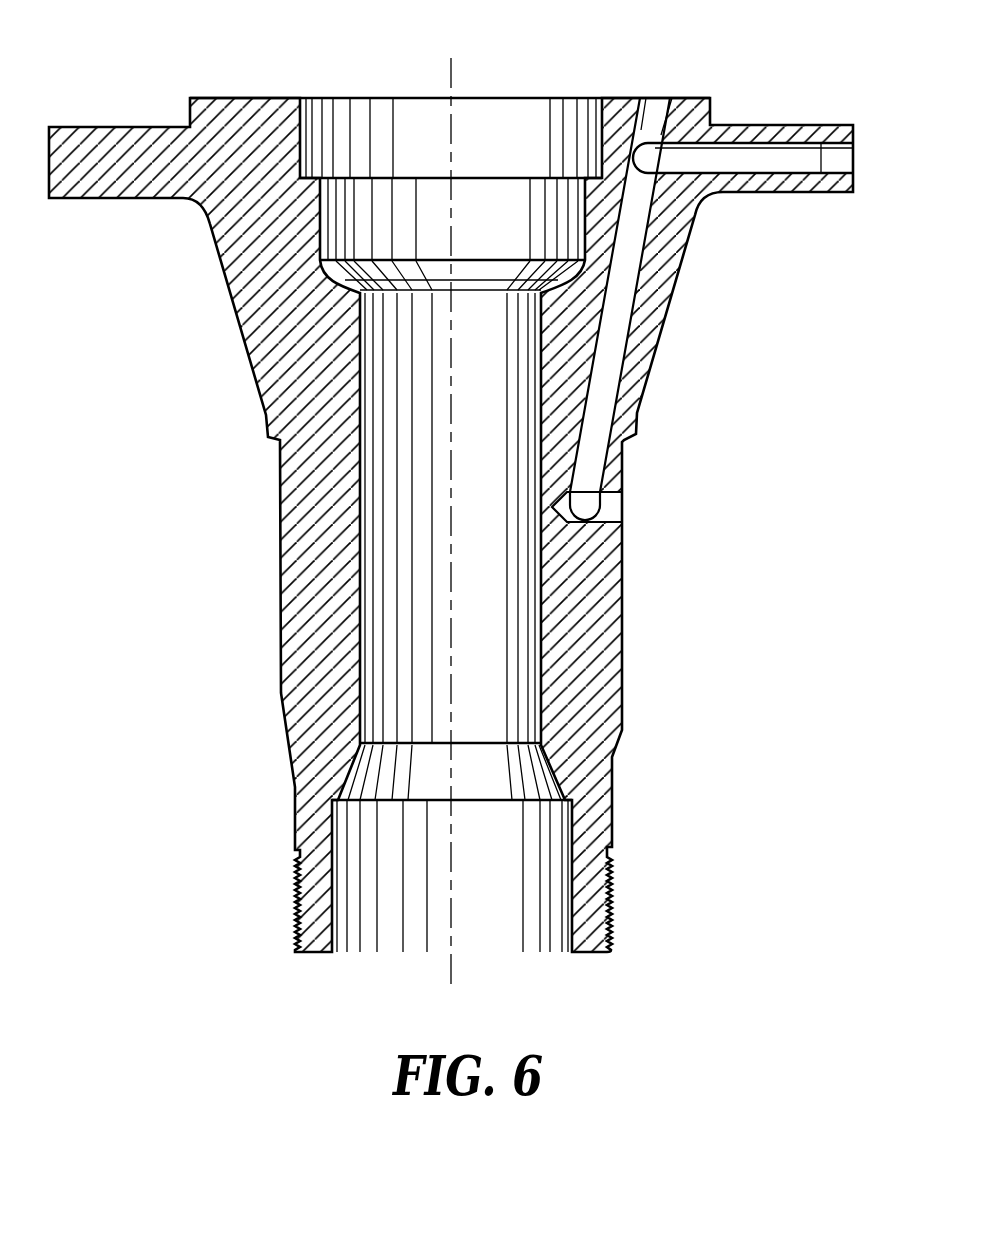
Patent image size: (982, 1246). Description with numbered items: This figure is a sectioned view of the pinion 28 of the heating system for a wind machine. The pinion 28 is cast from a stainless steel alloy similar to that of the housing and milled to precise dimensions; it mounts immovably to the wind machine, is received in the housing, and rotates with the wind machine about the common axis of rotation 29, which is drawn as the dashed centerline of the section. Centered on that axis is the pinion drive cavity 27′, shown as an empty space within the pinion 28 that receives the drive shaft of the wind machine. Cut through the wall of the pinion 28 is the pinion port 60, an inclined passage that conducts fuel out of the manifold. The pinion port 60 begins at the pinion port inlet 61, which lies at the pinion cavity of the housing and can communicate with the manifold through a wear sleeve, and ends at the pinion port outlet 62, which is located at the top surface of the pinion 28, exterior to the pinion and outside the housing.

The pinion drive cavity 27′ is at (430, 130).
The pinion 28 is at (268, 352).
The common axis of rotation 29 is at (451, 73).
The pinion port 60 is at (617, 333).
The pinion port inlet 61 is at (607, 508).
The pinion port outlet 62 is at (835, 158).